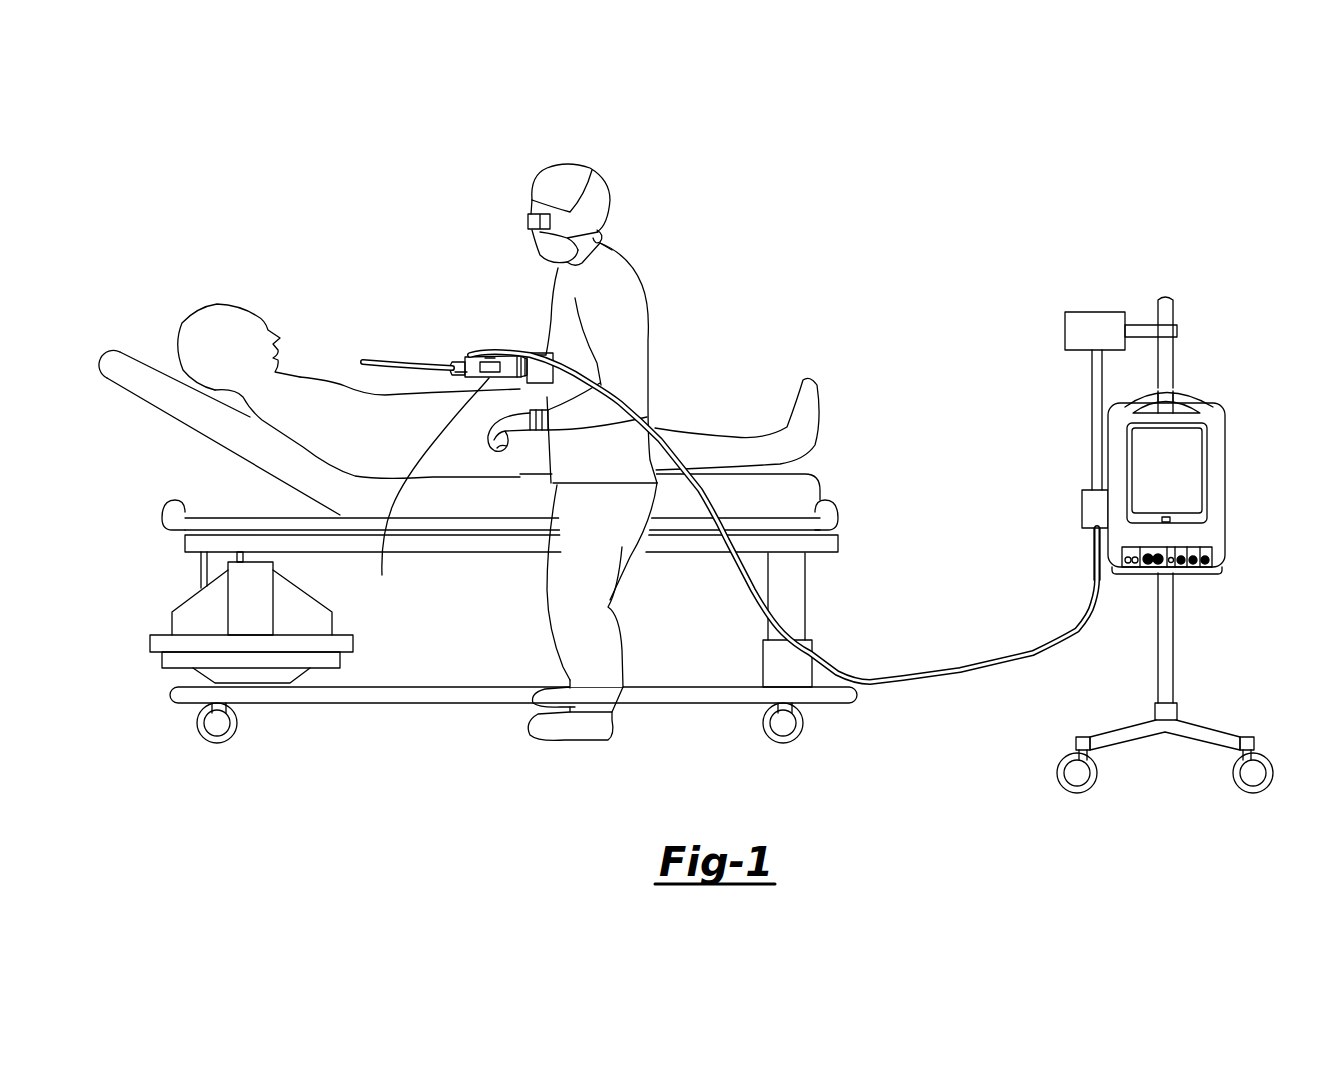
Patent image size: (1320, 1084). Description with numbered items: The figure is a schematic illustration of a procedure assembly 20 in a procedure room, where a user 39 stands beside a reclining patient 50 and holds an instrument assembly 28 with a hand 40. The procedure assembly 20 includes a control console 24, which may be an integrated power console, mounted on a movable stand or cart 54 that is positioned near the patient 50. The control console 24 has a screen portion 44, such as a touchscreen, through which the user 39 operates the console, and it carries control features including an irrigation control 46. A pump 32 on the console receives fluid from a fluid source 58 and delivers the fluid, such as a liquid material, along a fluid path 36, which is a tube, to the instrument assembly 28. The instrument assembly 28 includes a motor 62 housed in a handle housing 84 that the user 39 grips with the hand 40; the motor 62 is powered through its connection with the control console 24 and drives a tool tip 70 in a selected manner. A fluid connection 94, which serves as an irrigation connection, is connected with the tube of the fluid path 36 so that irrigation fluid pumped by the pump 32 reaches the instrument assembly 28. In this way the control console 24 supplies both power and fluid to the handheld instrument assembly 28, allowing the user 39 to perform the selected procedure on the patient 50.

The procedure assembly 20 is at (1033, 160).
The control console 24 is at (1230, 450).
The instrument assembly 28 is at (451, 355).
The pump 32 is at (1075, 510).
The fluid path 36 is at (1095, 575).
The user 39 is at (656, 283).
The hand 40 is at (428, 489).
The screen portion 44 is at (1185, 487).
The irrigation control 46 is at (1193, 567).
The patient 50 is at (271, 290).
The cart 54 is at (1177, 680).
The fluid source 58 is at (1100, 312).
The motor 62 is at (489, 343).
The tool tip 70 is at (363, 362).
The handle housing 84 is at (454, 388).
The fluid connection 94 is at (465, 358).